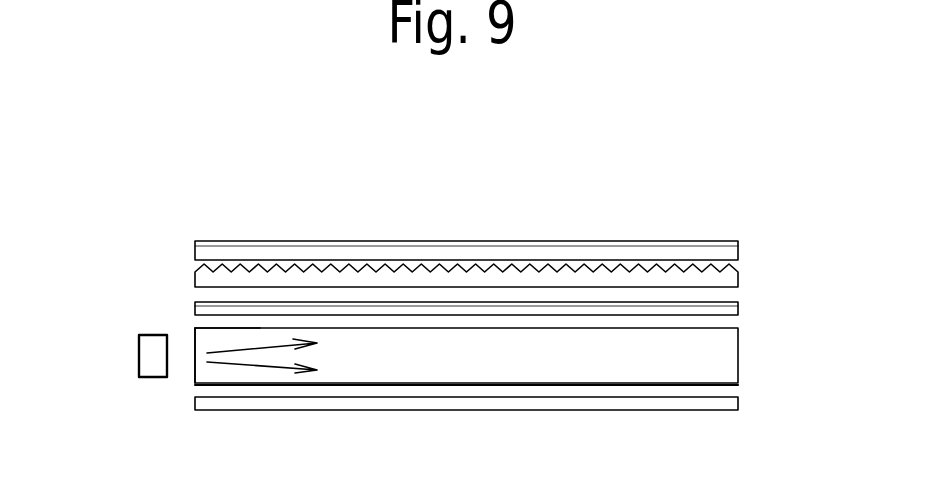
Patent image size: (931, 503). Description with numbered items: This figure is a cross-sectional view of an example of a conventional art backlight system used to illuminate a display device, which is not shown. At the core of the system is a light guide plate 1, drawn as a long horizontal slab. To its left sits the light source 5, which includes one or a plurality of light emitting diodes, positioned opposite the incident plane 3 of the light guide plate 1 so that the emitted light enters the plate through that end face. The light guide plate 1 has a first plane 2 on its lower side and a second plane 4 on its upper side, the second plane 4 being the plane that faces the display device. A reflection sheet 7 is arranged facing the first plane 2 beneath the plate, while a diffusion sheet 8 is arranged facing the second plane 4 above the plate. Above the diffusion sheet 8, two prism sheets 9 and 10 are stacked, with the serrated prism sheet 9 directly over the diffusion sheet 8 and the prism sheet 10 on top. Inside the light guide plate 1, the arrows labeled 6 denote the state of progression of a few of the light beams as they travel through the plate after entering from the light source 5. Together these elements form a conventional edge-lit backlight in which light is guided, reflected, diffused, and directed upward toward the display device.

The light guide plate 1 is at (728, 358).
The first plane 2 is at (208, 386).
The incident plane 3 is at (195, 337).
The second plane 4 is at (222, 328).
The light source 5 is at (145, 357).
The state of progression of light beams 6 is at (262, 363).
The reflection sheet 7 is at (730, 407).
The diffusion sheet 8 is at (738, 307).
The prism sheet 9 is at (738, 277).
The prism sheet 10 is at (738, 251).